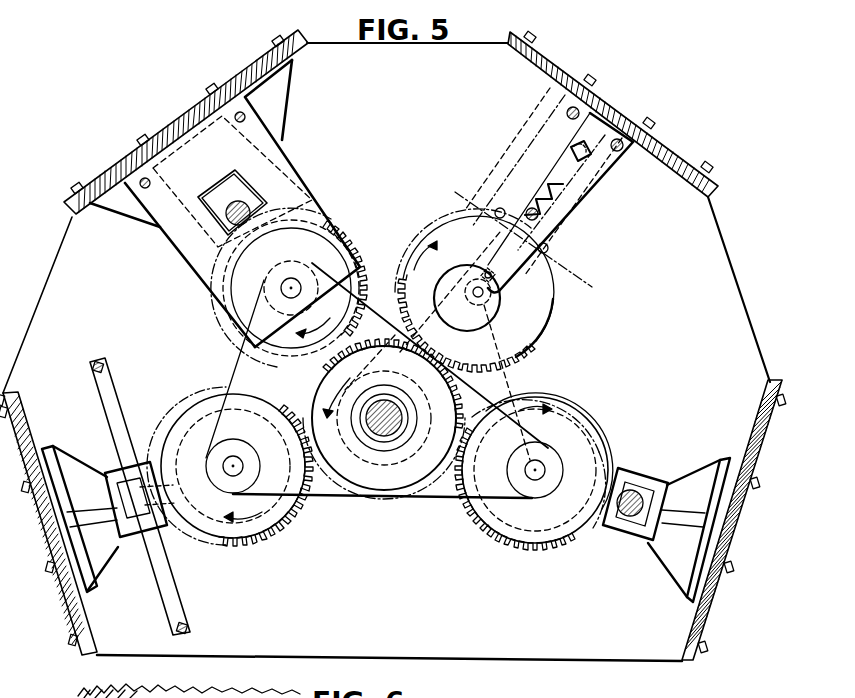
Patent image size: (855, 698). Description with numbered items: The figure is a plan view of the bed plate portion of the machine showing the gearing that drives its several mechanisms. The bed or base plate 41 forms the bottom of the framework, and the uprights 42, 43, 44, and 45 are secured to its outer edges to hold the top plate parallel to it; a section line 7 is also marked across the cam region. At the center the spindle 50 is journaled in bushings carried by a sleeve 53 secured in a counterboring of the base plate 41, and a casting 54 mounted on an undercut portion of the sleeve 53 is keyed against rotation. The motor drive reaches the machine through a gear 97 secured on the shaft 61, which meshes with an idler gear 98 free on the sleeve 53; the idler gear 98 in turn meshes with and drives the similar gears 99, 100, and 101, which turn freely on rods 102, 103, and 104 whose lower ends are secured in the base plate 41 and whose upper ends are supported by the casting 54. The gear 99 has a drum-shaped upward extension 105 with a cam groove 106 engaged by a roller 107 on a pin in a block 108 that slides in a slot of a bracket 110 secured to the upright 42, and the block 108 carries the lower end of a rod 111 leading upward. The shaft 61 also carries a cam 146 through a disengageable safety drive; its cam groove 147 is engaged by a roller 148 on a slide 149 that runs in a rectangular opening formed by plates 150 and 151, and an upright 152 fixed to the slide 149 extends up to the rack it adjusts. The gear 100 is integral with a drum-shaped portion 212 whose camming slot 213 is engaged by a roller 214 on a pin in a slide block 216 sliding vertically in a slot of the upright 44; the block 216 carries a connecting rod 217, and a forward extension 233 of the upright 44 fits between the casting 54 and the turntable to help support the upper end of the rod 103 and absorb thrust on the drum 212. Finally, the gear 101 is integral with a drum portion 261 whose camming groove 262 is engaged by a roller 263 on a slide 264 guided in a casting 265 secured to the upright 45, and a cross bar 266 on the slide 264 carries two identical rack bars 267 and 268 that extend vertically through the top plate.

The section line 7- 7 is at (468, 174).
The base plate 41 is at (67, 240).
The upright 42 is at (705, 597).
The upright 43 is at (552, 56).
The upright 44 is at (190, 117).
The upright 45 is at (78, 615).
The spindle 50 is at (380, 427).
The sleeve 53 is at (407, 437).
The casting 54 is at (326, 490).
The shaft 61 is at (478, 298).
The gear 97 is at (566, 390).
The idler gear 98 is at (428, 518).
The gear 99 is at (535, 553).
The gear 100 is at (352, 230).
The gear 101 is at (238, 548).
The rod 102 is at (533, 480).
The rod 103 is at (310, 250).
The rod 104 is at (258, 428).
The drum-shaped upward extension 105 is at (568, 542).
The cam groove 106 is at (542, 532).
The roller 107 is at (615, 436).
The block 108 is at (603, 524).
The bracket 110 is at (717, 445).
The rod 111 is at (633, 474).
The cam 146 is at (542, 330).
The cam groove 147 is at (502, 362).
The roller 148 is at (535, 310).
The slide 149 is at (570, 160).
The plate 150 is at (562, 127).
The plate 151 is at (615, 182).
The upright 152 is at (583, 213).
The drum-shaped portion 212 is at (364, 267).
The camming slot 213 is at (347, 200).
The roller 214 is at (306, 193).
The slide block 216 is at (233, 180).
The connecting rod 217 is at (233, 208).
The forward extension 233 is at (203, 270).
The drum portion 261 is at (257, 536).
The camming groove 262 is at (222, 368).
The roller 263 is at (173, 416).
The slide 264 is at (170, 527).
The casting 265 is at (97, 437).
The cross bar 266 is at (107, 398).
The rack bar 267 is at (102, 337).
The rack bar 268 is at (188, 627).